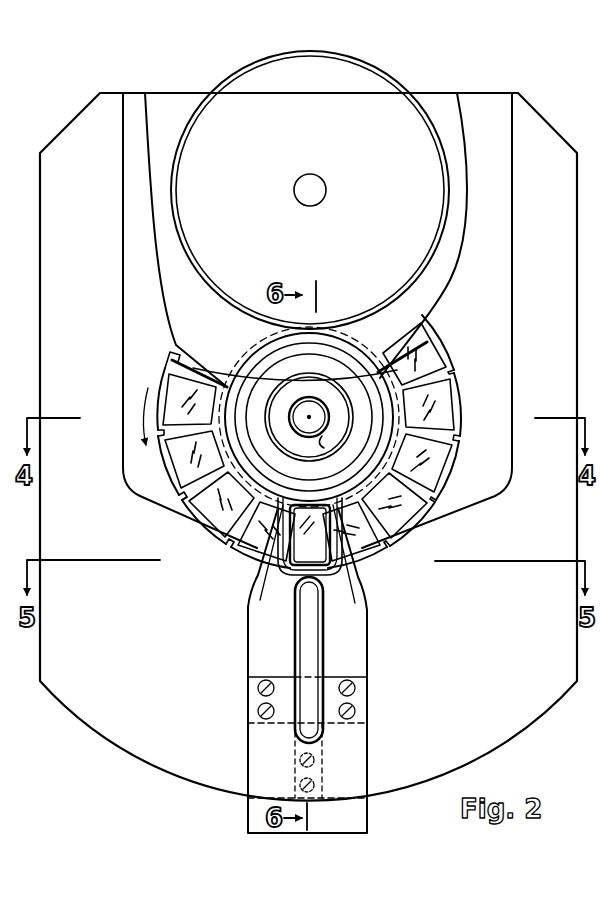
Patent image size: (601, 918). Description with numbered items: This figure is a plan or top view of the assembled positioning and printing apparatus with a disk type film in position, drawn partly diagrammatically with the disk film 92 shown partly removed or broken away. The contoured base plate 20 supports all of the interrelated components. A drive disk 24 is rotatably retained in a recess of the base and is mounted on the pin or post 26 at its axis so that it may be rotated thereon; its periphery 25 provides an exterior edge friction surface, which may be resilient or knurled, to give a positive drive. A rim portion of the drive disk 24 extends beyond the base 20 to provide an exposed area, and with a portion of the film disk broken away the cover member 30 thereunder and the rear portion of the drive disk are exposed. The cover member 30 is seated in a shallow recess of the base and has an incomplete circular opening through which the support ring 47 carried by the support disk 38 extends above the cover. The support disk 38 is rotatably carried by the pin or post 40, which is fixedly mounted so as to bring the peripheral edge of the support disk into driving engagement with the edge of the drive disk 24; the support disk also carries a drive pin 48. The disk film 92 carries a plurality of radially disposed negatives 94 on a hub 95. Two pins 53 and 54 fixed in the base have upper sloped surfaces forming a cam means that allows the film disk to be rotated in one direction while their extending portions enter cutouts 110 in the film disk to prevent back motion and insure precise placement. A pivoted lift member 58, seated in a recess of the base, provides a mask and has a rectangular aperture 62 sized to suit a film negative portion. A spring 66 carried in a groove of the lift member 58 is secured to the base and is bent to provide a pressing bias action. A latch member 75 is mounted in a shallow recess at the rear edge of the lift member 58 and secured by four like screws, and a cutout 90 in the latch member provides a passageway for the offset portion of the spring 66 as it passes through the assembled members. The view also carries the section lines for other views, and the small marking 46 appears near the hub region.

The base plate 20 is at (548, 143).
The drive disk 24 is at (428, 173).
The periphery 25 is at (176, 243).
The pin or post 26 is at (313, 180).
The cover member 30 is at (500, 102).
The support disk 38 is at (256, 352).
The pin or post 40 is at (312, 396).
The clip 46 is at (335, 440).
The support ring 47 is at (262, 340).
The drive pin 48 is at (344, 412).
The pin 53 is at (252, 583).
The pin 54 is at (352, 573).
The lift member 58 is at (262, 658).
The aperture 62 is at (318, 540).
The spring 66 is at (315, 650).
The latch member 75 is at (352, 762).
The cutout 90 is at (305, 735).
The disk film 92 is at (185, 368).
The negatives 94 is at (432, 357).
The hub 95 is at (220, 512).
The cutouts 110 is at (452, 363).